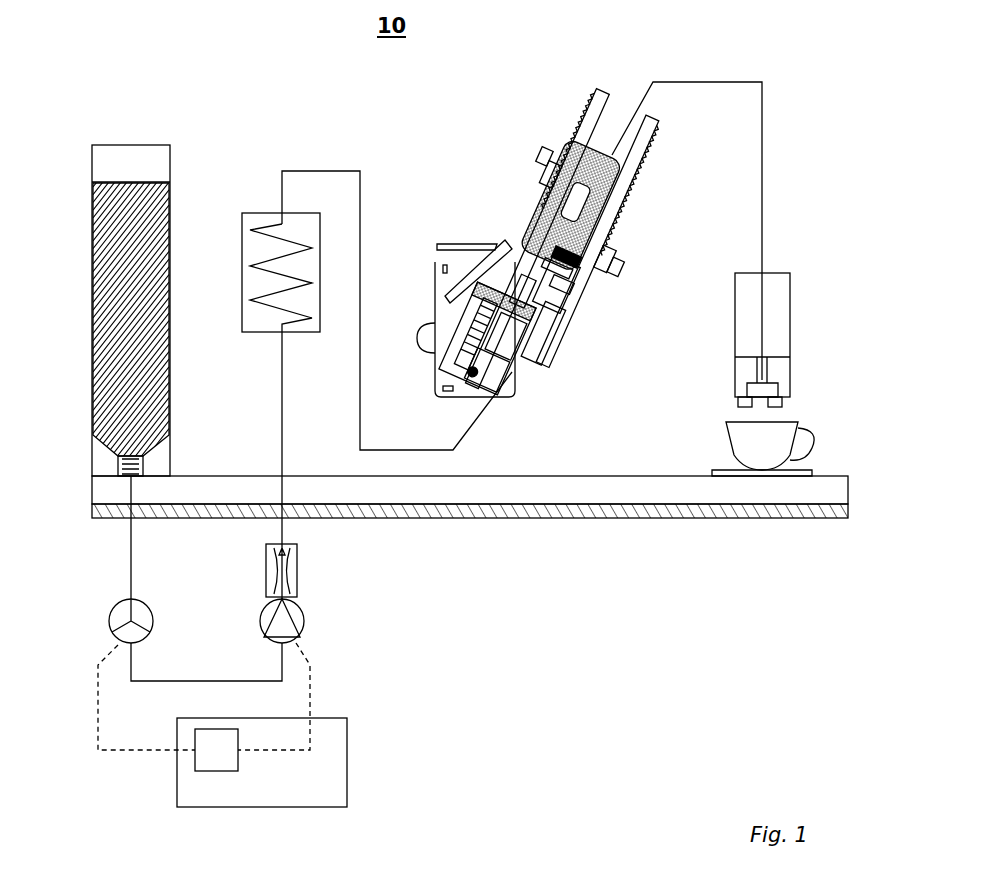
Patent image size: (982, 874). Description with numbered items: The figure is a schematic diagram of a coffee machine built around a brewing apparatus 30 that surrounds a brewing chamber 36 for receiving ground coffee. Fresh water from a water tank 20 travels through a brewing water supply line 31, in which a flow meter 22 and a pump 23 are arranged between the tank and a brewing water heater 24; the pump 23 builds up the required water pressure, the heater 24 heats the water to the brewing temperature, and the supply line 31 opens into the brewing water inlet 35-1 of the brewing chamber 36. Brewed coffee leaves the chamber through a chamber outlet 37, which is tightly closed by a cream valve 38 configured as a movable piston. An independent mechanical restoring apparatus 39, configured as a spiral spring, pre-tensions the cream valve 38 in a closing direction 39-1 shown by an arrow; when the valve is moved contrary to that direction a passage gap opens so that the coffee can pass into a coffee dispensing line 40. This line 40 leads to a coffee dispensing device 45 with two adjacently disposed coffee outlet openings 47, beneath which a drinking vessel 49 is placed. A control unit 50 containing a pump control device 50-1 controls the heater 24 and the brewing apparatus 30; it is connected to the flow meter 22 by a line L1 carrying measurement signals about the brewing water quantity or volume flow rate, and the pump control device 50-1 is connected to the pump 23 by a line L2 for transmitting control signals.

The water tank 20 is at (92, 166).
The flow meter 22 is at (110, 626).
The pump 23 is at (305, 622).
The brewing water heater 24 is at (243, 326).
The brewing apparatus 30 is at (493, 192).
The brewing water supply line 31 is at (327, 171).
The brewing water inlet 35-1 is at (522, 370).
The brewing chamber 36 is at (524, 310).
The chamber outlet 37 is at (526, 286).
The cream valve 38 is at (548, 281).
The restoring apparatus 39 is at (542, 268).
The closing direction 39-1 is at (558, 296).
The coffee dispensing line 40 is at (712, 82).
The coffee dispensing device 45 is at (792, 362).
The coffee outlet openings 47 is at (744, 407).
The drinking vessel 49 is at (763, 449).
The control unit 50 is at (349, 808).
The pump control device 50-1 is at (219, 772).
The line L1 is at (97, 710).
The line L2 is at (310, 690).